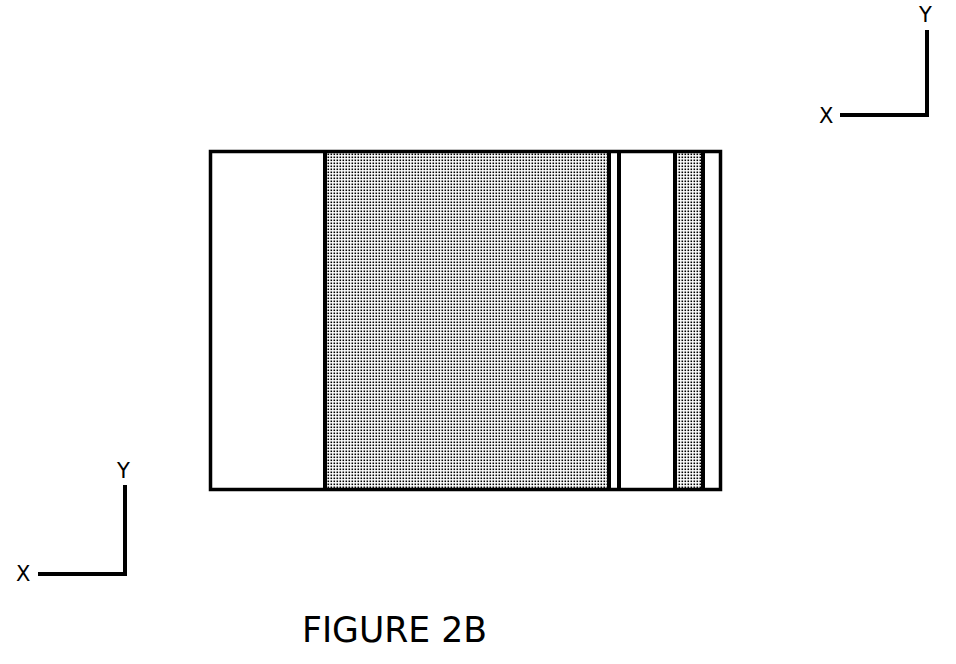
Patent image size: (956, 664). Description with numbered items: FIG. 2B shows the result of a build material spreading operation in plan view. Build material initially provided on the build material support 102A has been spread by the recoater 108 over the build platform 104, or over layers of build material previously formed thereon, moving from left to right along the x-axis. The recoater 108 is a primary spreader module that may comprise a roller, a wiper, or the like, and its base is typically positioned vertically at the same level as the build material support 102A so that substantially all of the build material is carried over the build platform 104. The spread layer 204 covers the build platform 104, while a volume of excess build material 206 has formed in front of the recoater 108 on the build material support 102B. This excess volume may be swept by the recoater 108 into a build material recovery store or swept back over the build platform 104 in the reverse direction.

The build material support 102A is at (224, 152).
The build material support 102B is at (708, 165).
The build platform 104 is at (438, 151).
The recoater module 108 is at (660, 473).
The first electrode layer 204 is at (392, 475).
The excess build material 206 is at (693, 475).